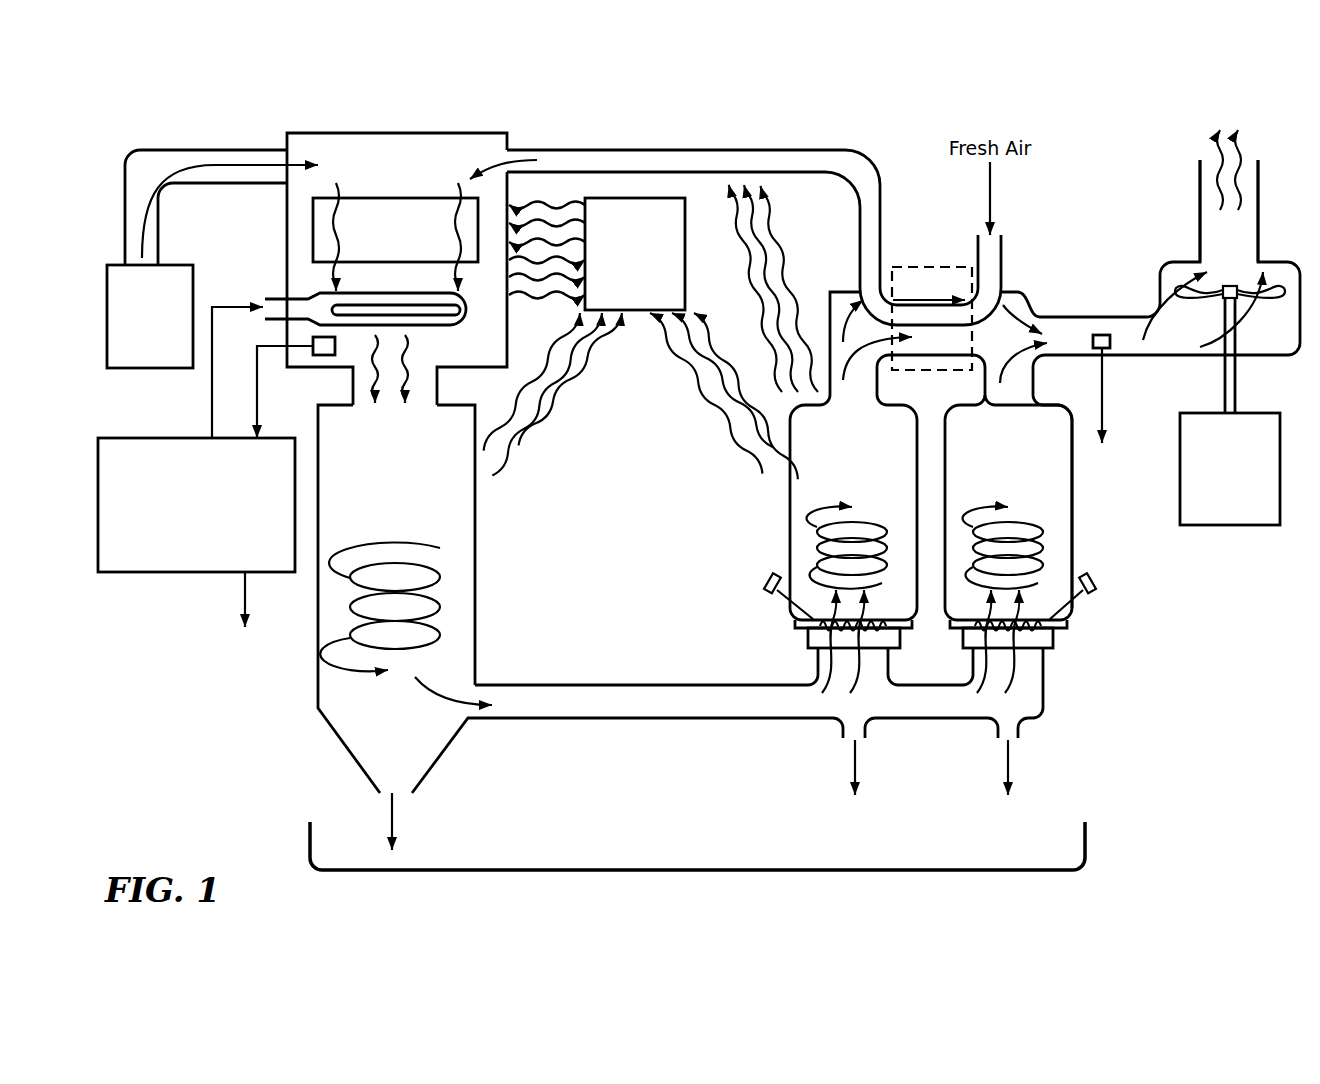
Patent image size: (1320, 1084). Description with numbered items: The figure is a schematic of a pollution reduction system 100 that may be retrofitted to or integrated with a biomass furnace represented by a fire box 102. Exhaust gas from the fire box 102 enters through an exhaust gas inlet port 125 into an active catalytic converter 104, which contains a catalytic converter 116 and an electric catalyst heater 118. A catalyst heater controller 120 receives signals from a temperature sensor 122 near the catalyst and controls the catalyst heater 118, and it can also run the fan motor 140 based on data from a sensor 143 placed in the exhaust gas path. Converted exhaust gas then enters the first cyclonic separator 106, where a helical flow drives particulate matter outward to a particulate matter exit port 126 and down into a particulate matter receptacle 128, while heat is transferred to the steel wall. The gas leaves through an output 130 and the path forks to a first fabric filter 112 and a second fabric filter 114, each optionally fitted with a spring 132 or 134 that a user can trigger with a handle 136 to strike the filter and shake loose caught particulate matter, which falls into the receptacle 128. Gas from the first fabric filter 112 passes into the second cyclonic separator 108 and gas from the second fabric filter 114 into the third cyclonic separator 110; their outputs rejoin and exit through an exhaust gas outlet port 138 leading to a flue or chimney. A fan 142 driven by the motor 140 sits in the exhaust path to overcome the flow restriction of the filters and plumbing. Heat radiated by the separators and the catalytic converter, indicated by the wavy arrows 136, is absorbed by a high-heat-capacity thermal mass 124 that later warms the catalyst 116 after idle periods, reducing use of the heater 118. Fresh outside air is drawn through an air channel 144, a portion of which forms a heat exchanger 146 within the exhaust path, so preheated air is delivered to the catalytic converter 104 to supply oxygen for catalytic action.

The pollution reduction system 100 is at (1124, 110).
The fire box 102 is at (133, 355).
The active catalytic converter 104 is at (434, 110).
The first cyclonic separator 106 is at (378, 520).
The second cyclonic separator 108 is at (836, 493).
The third cyclonic separator 110 is at (993, 493).
The first fabric filter 112 is at (808, 641).
The second fabric filter 114 is at (1053, 641).
The catalytic converter 116 is at (378, 255).
The electric catalyst heater 118 is at (320, 297).
The catalyst heater controller 120 is at (180, 560).
The temperature sensor 122 is at (313, 345).
The thermal mass 124 is at (618, 298).
The exhaust gas inlet port 125 is at (283, 145).
The particulate matter exit port 126 is at (380, 797).
The particulate matter receptacle 128 is at (1085, 828).
The output 130 is at (497, 683).
The spring 132 is at (795, 616).
The spring 134 is at (1067, 616).
The handle 136 is at (765, 578).
The exhaust gas outlet port 138 is at (1200, 212).
The fan motor 140 is at (1213, 514).
The fan 142 is at (1178, 288).
The sensor 143 is at (1110, 347).
The air channel 144 is at (693, 150).
The heat exchanger 146 is at (908, 265).